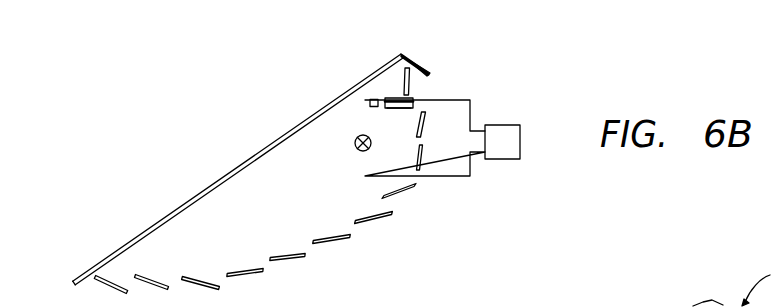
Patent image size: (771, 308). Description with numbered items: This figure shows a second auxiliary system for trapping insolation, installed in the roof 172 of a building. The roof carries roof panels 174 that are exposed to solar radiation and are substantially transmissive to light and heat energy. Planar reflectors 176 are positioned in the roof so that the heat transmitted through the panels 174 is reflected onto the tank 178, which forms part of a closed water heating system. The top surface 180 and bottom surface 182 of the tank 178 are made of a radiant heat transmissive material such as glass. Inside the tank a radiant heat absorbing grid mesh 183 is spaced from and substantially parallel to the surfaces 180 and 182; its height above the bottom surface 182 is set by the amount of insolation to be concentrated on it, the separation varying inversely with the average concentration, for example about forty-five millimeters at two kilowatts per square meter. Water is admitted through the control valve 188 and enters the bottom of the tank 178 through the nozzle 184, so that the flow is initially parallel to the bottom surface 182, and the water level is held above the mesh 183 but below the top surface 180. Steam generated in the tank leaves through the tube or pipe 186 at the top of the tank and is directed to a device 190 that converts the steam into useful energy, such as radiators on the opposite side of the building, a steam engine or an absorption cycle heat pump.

The roof 172 is at (411, 44).
The roof panels 174 is at (205, 184).
The planar reflectors 176 is at (200, 277).
The tank 178 is at (424, 106).
The top surface 180 is at (396, 54).
The bottom surface 182 is at (398, 110).
The radiant heat absorbing grid mesh 183 is at (391, 98).
The nozzle 184 is at (365, 97).
The tube or pipe 186 is at (413, 98).
The control valve 188 is at (350, 150).
The device 190 is at (503, 125).